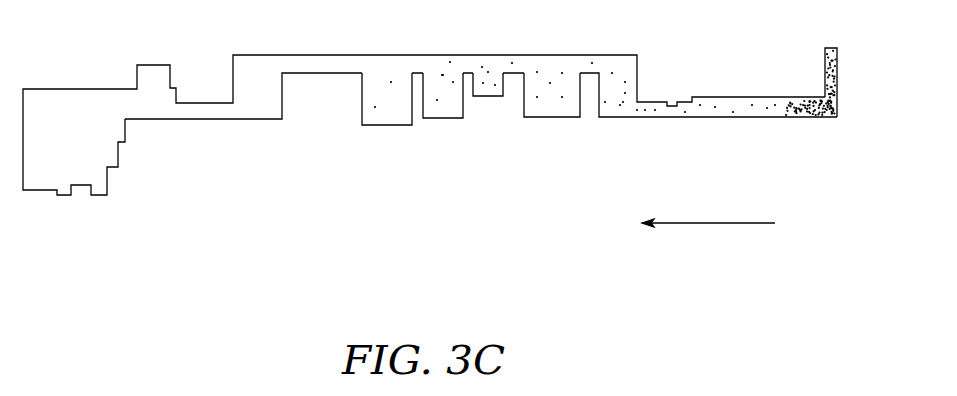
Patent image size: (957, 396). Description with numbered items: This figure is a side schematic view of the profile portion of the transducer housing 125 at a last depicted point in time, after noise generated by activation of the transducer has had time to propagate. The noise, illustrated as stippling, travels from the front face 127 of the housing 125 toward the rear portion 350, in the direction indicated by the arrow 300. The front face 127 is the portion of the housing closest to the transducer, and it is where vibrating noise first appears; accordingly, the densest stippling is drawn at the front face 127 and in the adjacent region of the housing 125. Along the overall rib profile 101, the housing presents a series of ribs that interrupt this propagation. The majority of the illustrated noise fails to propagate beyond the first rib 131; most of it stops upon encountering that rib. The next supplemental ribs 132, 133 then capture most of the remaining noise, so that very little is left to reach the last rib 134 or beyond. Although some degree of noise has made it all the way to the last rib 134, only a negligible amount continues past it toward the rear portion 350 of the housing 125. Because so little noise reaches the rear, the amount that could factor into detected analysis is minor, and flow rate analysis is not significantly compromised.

The rib profile 101 is at (462, 141).
The transducer housing 125 is at (330, 67).
The front face 127 is at (836, 92).
The first rib 131 is at (555, 108).
The supplemental rib 132 is at (487, 88).
The supplemental rib 133 is at (448, 112).
The last rib 134 is at (386, 117).
The arrow 300 is at (693, 223).
The rear portion 350 is at (39, 180).